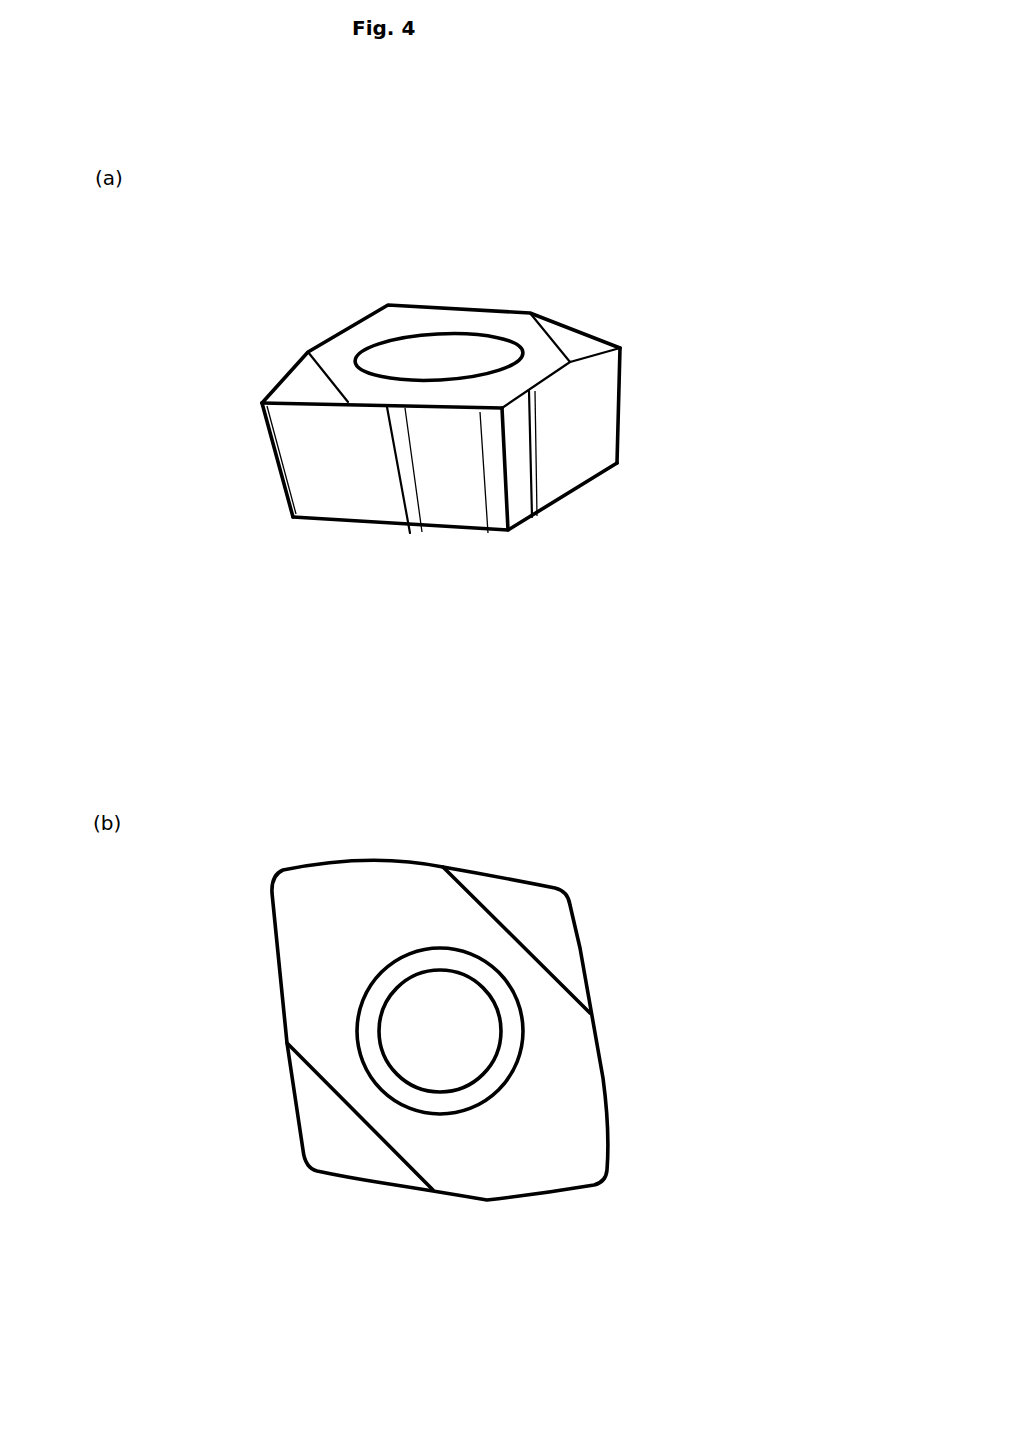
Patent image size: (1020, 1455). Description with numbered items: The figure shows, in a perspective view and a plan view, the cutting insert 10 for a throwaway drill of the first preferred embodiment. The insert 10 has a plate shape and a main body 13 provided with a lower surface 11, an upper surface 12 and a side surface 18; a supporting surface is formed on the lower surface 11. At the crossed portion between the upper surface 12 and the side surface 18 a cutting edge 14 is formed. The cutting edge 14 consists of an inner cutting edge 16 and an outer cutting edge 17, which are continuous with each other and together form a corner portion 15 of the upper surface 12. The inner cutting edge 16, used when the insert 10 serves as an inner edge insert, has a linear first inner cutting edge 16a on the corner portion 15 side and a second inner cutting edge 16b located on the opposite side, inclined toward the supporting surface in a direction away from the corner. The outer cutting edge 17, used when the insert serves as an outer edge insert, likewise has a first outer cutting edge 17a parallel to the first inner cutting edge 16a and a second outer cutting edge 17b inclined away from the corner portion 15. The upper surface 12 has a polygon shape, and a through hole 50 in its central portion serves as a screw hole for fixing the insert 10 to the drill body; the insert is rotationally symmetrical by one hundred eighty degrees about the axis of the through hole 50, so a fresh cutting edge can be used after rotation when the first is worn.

The cutting insert 10 is at (597, 262).
The lower surface 11 is at (312, 530).
The upper surface 12 is at (332, 348).
The main body 13 is at (128, 375).
The cutting edge 14 is at (465, 192).
The corner portion 15 is at (390, 304).
The inner cutting edge 16 is at (352, 320).
The first inner cutting edge 16a is at (552, 362).
The second inner cutting edge 16b is at (588, 385).
The outer cutting edge 17 is at (432, 305).
The first outer cutting edge 17a is at (452, 408).
The second outer cutting edge 17b is at (305, 378).
The side surface 18 is at (300, 453).
The through hole 50 is at (440, 357).